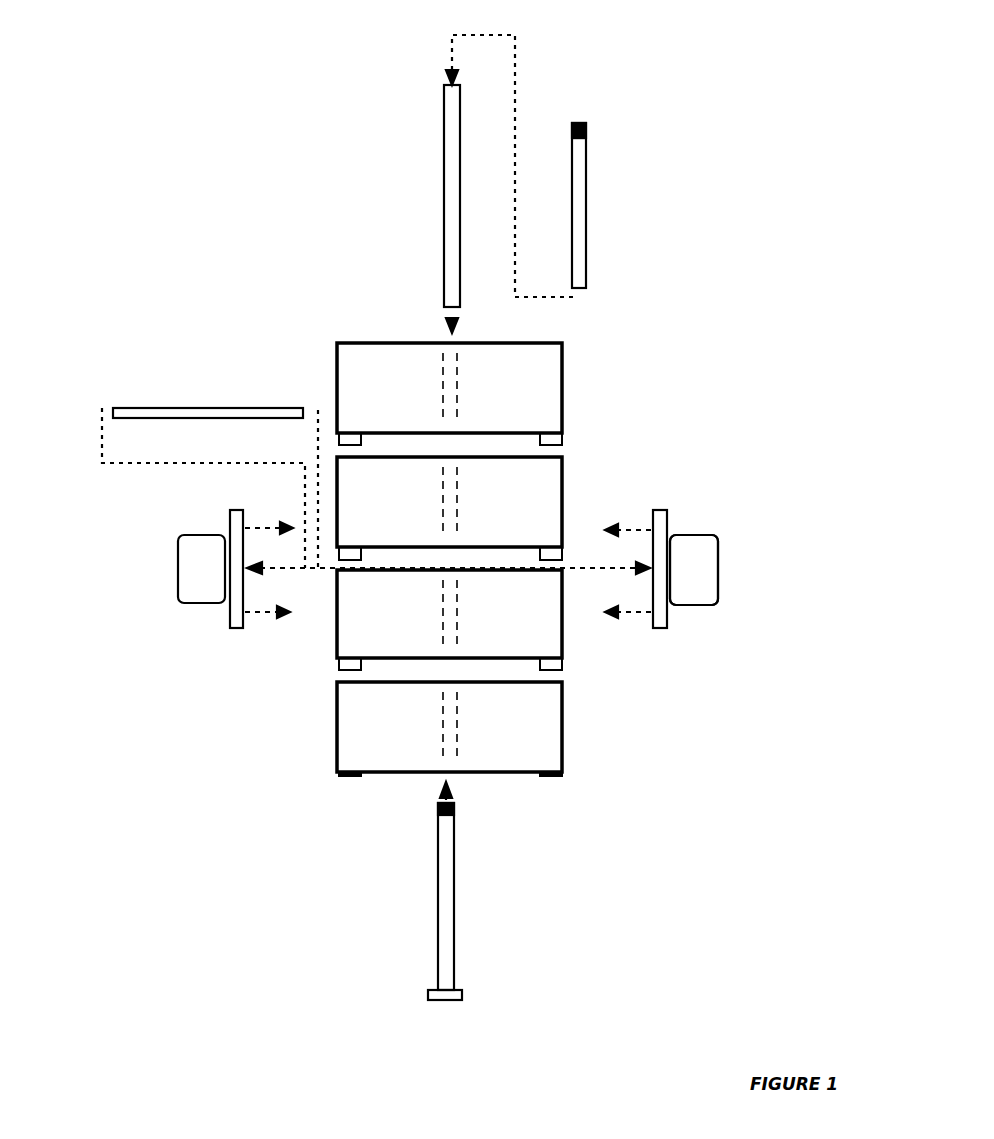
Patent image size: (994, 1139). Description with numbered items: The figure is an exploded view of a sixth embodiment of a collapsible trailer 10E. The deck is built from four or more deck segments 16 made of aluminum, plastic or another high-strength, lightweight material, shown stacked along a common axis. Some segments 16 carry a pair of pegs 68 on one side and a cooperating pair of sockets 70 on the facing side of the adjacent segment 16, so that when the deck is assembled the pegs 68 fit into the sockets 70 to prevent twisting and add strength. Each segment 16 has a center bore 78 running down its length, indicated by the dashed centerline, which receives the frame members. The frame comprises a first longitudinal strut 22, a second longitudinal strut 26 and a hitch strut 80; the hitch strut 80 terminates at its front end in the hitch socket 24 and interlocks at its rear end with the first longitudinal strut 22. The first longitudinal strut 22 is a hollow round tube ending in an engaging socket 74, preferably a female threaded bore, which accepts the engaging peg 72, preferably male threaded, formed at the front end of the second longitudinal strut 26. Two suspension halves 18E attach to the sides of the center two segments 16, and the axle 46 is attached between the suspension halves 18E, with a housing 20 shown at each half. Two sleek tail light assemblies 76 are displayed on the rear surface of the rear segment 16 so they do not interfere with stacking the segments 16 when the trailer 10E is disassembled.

The trailer embodiment 10E is at (442, 517).
The deck segment 16 is at (562, 490).
The suspension half 18E is at (181, 630).
The sensor housing 20 is at (718, 567).
The first longitudinal strut 22 is at (443, 230).
The hitch socket 24 is at (586, 147).
The second longitudinal strut 26 is at (454, 922).
The axle 46 is at (172, 407).
The peg 68 is at (562, 661).
The socket 70 is at (345, 716).
The engaging peg 72 is at (433, 813).
The engaging socket 74 is at (428, 298).
The tail light assembly 76 is at (347, 796).
The center bore 78 is at (425, 397).
The hitch strut 80 is at (586, 225).